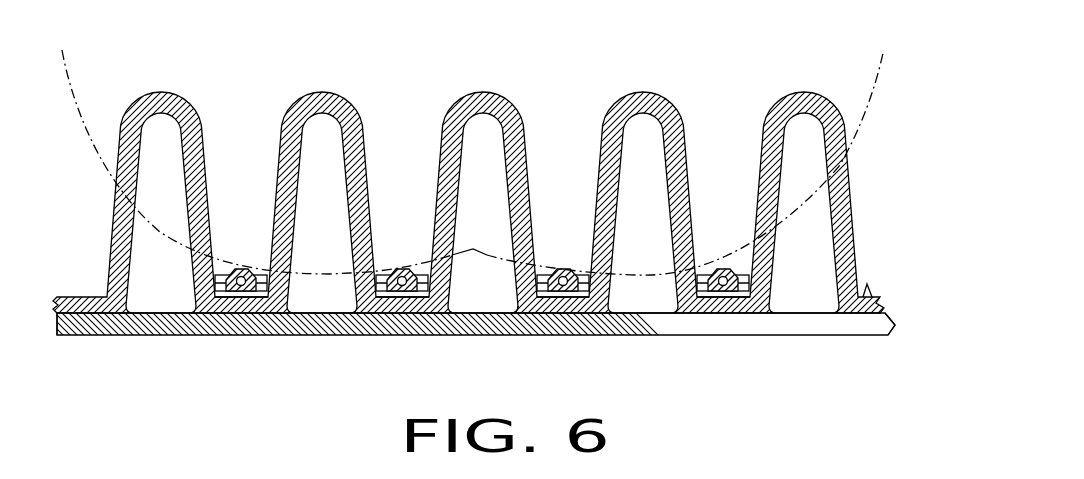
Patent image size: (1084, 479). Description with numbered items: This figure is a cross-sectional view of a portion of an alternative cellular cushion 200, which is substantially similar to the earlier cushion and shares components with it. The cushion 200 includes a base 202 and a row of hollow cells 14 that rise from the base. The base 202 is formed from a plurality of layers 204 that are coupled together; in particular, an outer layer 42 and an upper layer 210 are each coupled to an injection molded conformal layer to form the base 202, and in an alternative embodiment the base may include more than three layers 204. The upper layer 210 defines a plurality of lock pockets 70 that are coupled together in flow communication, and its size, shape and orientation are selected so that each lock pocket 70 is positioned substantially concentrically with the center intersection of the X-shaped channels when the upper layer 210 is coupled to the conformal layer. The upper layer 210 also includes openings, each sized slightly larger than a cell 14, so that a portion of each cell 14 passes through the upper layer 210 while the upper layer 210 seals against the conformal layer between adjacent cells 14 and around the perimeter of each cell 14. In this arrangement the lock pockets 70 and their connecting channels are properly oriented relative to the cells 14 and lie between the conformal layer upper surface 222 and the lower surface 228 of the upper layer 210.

The cells 14 is at (162, 92).
The outer layer 42 is at (482, 325).
The lock pockets 70 is at (262, 297).
The cellular cushion 200 is at (121, 73).
The base 202 is at (162, 394).
The layers 204 is at (915, 318).
The upper layer 210 is at (403, 268).
The conformal layer upper surface 222 is at (858, 305).
The lower surface 228 is at (515, 302).